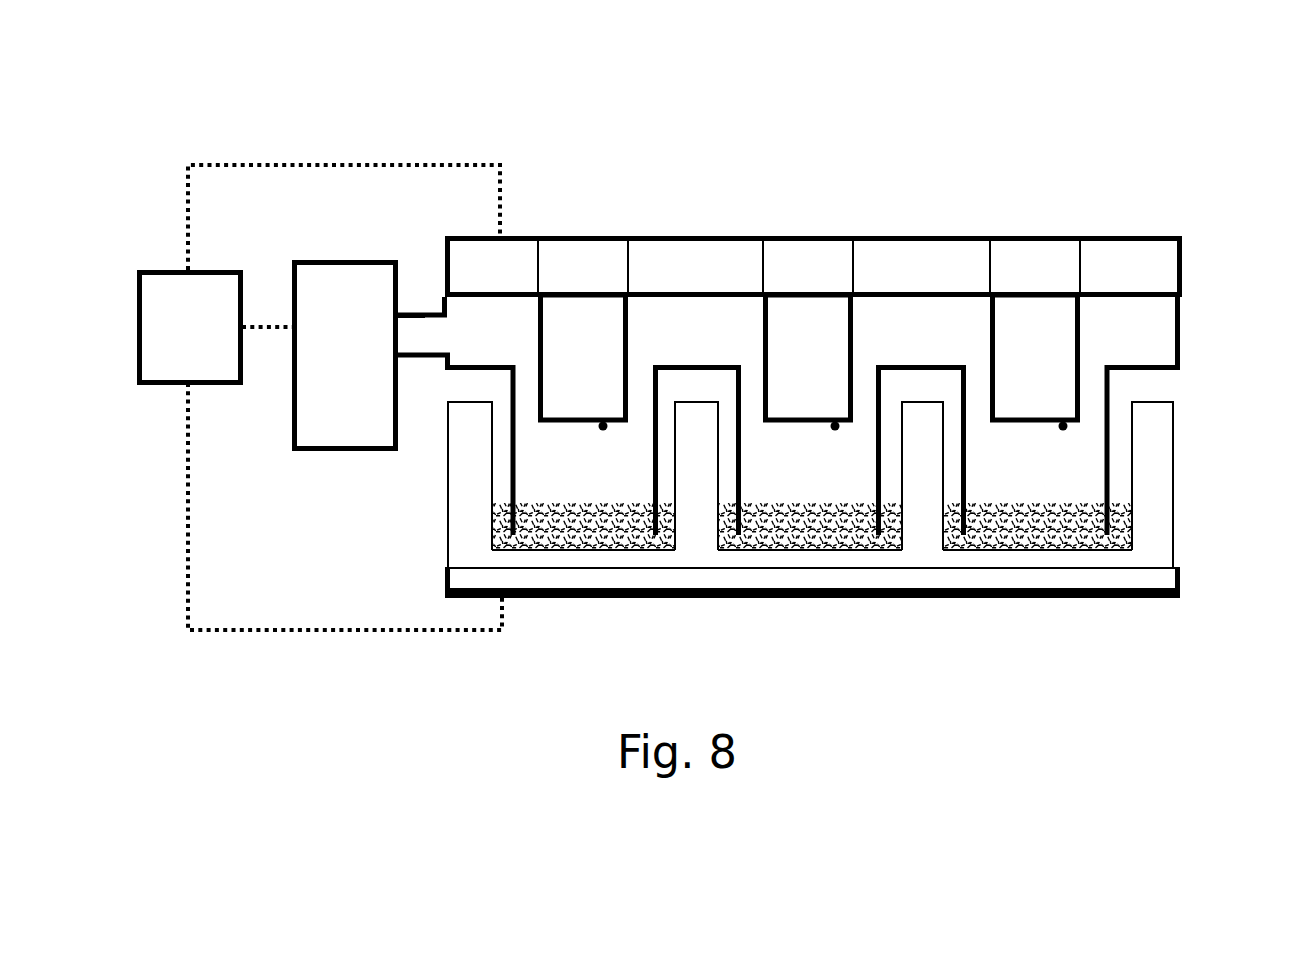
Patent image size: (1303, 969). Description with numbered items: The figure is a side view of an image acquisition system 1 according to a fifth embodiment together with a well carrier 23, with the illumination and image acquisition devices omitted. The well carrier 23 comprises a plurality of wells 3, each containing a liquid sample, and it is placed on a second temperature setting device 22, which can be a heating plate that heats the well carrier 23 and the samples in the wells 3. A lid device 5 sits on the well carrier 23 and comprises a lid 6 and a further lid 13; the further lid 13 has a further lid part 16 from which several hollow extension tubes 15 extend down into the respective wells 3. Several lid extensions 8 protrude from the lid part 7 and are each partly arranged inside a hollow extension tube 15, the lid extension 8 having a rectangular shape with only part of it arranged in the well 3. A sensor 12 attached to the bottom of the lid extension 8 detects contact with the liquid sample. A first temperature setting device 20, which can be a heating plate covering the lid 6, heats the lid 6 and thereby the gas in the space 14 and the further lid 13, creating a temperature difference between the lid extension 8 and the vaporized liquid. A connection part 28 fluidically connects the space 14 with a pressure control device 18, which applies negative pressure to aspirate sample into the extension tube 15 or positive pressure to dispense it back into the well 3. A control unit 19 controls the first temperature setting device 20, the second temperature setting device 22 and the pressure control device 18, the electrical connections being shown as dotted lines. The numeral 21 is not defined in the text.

The image acquisition system 1 is at (218, 127).
The well 3 is at (470, 537).
The lid device 5 is at (868, 294).
The lid 6 is at (432, 305).
The lid part 7 is at (918, 288).
The lid extension 8 is at (1080, 333).
The sensor 12 is at (833, 420).
The further lid 13 is at (450, 380).
The space 14 is at (527, 390).
The extension tube 15 is at (517, 508).
The further lid part 16 is at (1158, 370).
The pressure control device 18 is at (353, 437).
The control unit 19 is at (170, 375).
The first temperature setting device 20 is at (687, 262).
The upper electrode 21 is at (578, 262).
The second temperature setting device 22 is at (907, 583).
The well carrier 23 is at (1185, 483).
The connection part 28 is at (425, 318).